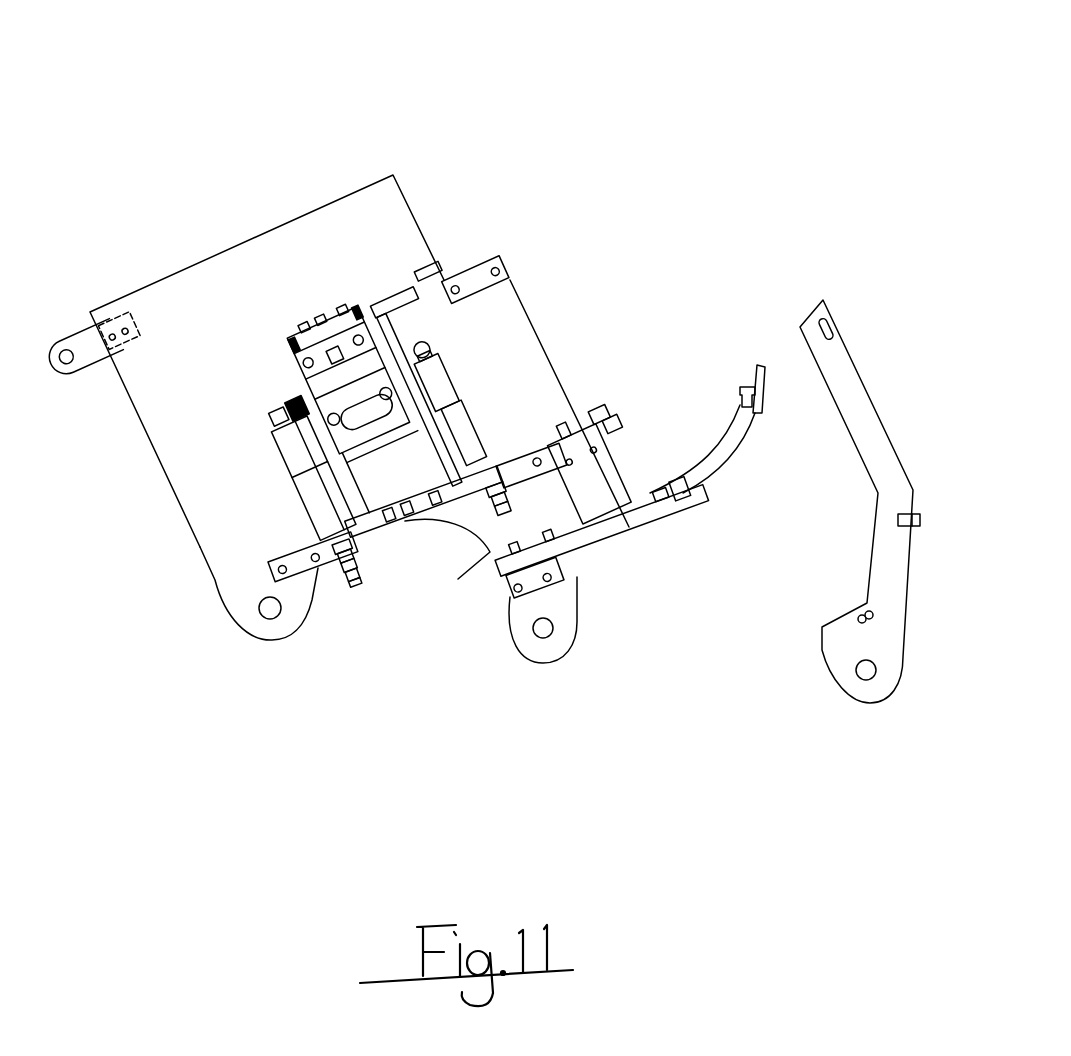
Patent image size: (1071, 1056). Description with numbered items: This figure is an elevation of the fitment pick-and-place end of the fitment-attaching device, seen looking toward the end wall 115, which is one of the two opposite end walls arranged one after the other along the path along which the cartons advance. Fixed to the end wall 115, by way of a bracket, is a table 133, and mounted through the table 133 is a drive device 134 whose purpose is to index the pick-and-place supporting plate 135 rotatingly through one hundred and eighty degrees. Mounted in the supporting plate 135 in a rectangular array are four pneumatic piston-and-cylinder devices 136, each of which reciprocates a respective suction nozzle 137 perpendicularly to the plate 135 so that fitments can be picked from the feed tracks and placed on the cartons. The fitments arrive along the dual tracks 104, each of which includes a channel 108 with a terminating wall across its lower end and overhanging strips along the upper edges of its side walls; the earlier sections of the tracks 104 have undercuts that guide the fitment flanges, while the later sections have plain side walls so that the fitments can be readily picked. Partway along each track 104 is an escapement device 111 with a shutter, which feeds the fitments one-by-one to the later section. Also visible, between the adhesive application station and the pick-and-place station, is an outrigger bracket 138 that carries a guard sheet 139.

The end wall 115 is at (378, 238).
The table 133 is at (380, 370).
The drive device 134 is at (322, 383).
The pneumatic piston-and-cylinder device 136 is at (445, 392).
The suction nozzle 137 is at (362, 587).
The pick-and-place supporting plate 135 is at (297, 563).
The escapement device 111 is at (595, 483).
The channel 108 is at (640, 523).
The dual tracks 104 is at (723, 460).
The guard sheet 139 is at (823, 300).
The outrigger bracket 138 is at (870, 705).